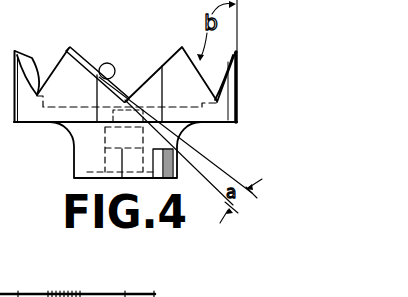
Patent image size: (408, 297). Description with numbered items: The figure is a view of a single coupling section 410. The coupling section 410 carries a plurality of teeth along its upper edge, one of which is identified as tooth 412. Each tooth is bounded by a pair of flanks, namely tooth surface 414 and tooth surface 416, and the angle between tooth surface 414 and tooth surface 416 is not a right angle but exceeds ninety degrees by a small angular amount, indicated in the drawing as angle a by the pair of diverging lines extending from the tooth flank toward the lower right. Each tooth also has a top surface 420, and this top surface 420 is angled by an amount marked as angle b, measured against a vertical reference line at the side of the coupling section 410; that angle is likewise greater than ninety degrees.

The coupling section 410 is at (239, 84).
The tooth 412 is at (75, 50).
The tooth surface 414 is at (65, 72).
The tooth surface 416 is at (161, 65).
The top surface 420 is at (228, 50).